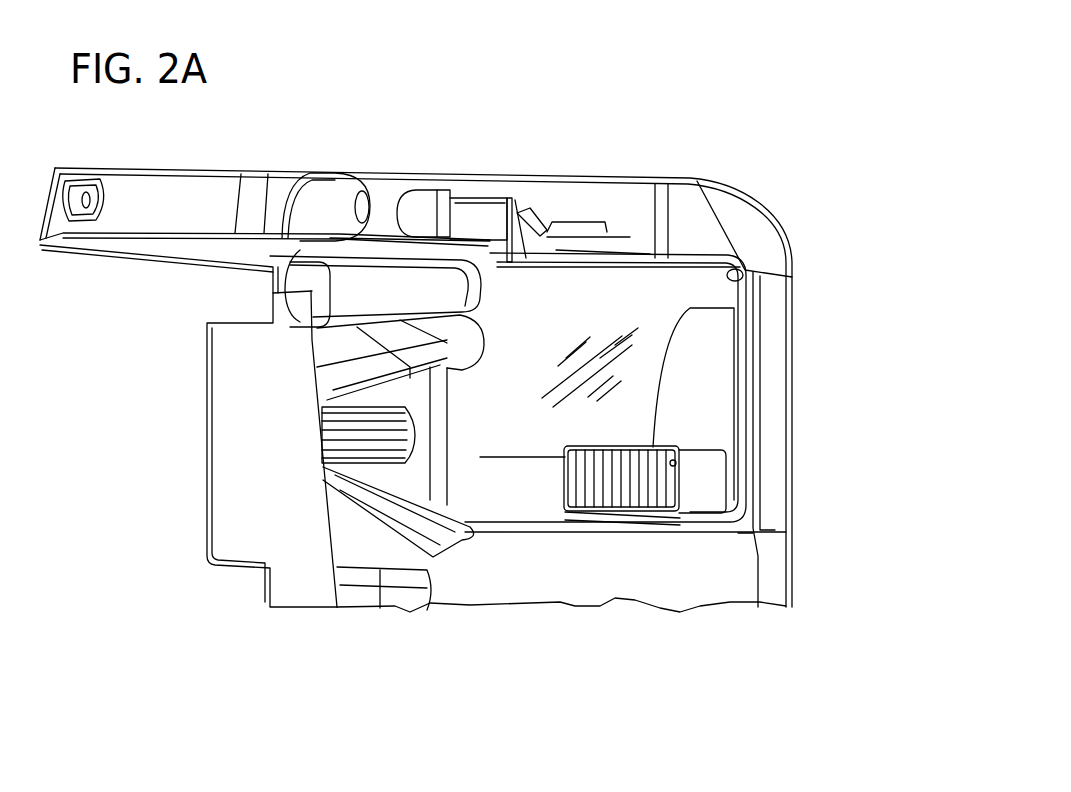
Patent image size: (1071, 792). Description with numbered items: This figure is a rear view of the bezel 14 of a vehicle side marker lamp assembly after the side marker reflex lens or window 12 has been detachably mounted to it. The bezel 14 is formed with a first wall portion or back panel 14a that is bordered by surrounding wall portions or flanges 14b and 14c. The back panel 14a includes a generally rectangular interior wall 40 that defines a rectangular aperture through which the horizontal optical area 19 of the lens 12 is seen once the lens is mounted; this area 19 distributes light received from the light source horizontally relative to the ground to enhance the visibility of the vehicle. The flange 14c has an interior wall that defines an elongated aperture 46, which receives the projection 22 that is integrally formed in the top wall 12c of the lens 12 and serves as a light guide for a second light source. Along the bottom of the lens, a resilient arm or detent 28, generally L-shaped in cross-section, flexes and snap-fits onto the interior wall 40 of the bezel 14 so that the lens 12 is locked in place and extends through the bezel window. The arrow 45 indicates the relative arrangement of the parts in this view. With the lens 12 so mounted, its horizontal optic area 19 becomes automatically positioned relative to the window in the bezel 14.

The side marker reflex lens 12 is at (508, 237).
The top wall 12c is at (632, 247).
The bezel 14 is at (610, 193).
The first wall portion 14a is at (625, 392).
The wall portion or flange 14b is at (780, 438).
The wall portion or flange 14c is at (582, 190).
The projection 22 is at (552, 232).
The direction arrow 45 is at (708, 247).
The interior wall 40 is at (676, 463).
The elongated aperture 46 is at (617, 502).
The horizontal optical area 19 is at (657, 485).
The resilient arm or detent 28 is at (598, 512).